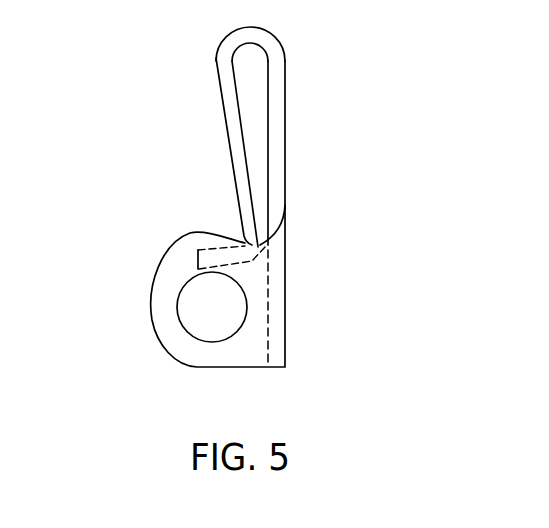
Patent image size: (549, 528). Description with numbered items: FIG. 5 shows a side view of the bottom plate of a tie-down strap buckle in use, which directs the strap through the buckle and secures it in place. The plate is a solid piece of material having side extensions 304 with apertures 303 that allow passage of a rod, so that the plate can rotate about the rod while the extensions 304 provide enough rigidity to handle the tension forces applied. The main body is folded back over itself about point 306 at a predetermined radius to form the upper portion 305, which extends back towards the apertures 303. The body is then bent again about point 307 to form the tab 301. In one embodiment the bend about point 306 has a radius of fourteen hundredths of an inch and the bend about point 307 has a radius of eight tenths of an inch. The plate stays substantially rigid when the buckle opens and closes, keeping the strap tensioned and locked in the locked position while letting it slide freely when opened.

The tab 301 is at (198, 262).
The apertures 303 is at (208, 333).
The side extensions 304 is at (150, 329).
The upper portion 305 is at (223, 105).
The bend point 306 is at (250, 57).
The bend point 307 is at (232, 241).